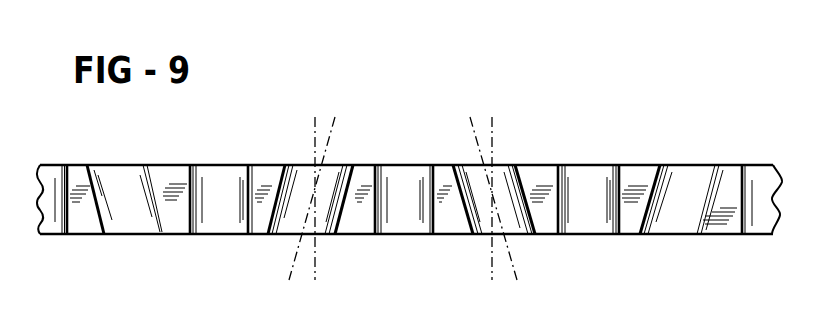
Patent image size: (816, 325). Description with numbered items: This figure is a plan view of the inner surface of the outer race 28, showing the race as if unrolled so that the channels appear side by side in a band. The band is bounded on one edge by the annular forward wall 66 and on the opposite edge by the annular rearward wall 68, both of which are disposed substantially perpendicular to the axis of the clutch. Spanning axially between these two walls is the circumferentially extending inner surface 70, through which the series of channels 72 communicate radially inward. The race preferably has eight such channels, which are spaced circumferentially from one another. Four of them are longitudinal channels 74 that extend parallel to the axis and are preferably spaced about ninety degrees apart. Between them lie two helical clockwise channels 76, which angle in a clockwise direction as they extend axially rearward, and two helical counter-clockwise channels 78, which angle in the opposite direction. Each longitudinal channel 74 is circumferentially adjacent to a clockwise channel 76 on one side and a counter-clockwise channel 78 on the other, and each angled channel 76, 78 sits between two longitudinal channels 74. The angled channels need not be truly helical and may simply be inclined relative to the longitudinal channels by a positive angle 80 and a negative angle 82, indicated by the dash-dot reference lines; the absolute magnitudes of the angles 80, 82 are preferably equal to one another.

The outer race 28 is at (637, 70).
The annular forward wall 66 is at (175, 236).
The annular rearward wall 68 is at (173, 165).
The inner surface 70 is at (270, 172).
The series of channels 72 is at (404, 158).
The longitudinal channel 74 is at (220, 172).
The helical clockwise channel 76 is at (687, 172).
The helical counter-clockwise channel 78 is at (123, 175).
The positive angle 80 is at (260, 252).
The negative angle 82 is at (547, 250).